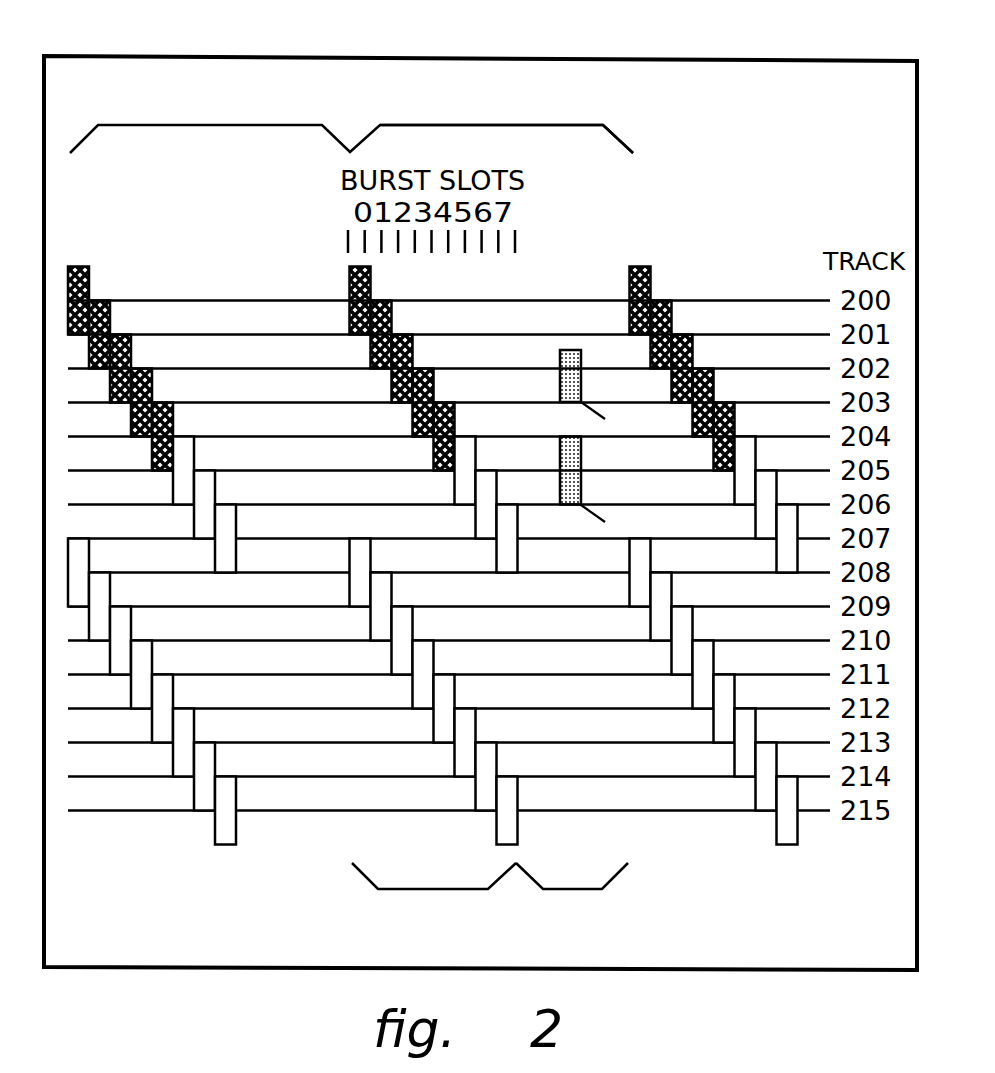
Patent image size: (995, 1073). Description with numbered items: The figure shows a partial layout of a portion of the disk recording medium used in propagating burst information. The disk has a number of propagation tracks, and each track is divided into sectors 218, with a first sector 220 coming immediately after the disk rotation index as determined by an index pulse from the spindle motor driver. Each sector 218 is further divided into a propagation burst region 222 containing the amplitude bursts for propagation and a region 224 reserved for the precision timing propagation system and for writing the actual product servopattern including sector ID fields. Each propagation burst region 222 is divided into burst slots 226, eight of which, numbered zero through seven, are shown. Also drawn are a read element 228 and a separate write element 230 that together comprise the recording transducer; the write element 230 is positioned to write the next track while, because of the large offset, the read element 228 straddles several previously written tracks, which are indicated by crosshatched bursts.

The sector 218 is at (418, 125).
The first sector 220 is at (495, 125).
The propagation burst region 222 is at (436, 892).
The region reserved for precision timing propagation and product servopattern 224 is at (583, 892).
The burst slots 226 is at (369, 352).
The read element 228 is at (557, 356).
The write element 230 is at (582, 458).